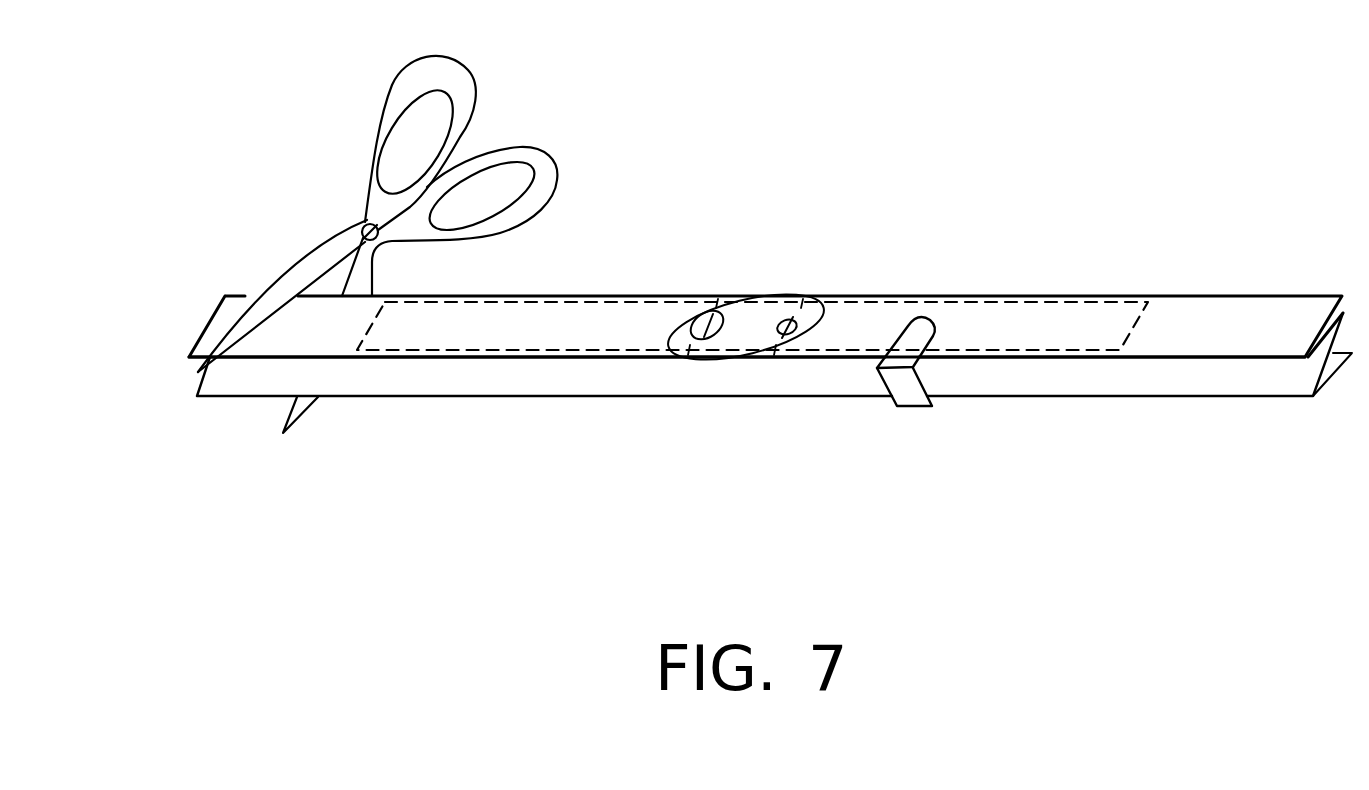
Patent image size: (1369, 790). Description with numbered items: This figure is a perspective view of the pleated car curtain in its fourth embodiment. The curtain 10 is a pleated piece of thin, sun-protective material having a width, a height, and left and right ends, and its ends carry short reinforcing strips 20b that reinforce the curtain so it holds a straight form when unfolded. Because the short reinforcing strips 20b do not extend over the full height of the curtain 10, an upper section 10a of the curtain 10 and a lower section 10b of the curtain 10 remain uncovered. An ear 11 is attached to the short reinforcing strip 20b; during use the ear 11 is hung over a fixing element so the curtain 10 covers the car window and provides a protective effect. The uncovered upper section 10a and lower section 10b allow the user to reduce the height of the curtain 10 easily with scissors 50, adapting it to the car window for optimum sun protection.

The curtain 10 is at (770, 382).
The upper section of the curtain 10a is at (313, 337).
The lower section of the curtain 10b is at (1190, 378).
The ear 11 is at (767, 312).
The short reinforcing strip 20b is at (1005, 325).
The scissors 50 is at (367, 215).